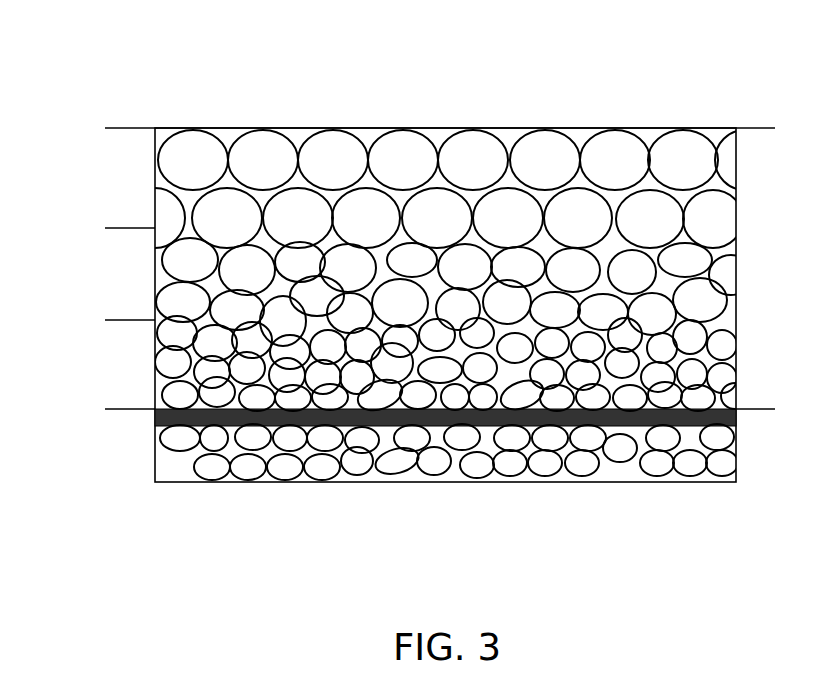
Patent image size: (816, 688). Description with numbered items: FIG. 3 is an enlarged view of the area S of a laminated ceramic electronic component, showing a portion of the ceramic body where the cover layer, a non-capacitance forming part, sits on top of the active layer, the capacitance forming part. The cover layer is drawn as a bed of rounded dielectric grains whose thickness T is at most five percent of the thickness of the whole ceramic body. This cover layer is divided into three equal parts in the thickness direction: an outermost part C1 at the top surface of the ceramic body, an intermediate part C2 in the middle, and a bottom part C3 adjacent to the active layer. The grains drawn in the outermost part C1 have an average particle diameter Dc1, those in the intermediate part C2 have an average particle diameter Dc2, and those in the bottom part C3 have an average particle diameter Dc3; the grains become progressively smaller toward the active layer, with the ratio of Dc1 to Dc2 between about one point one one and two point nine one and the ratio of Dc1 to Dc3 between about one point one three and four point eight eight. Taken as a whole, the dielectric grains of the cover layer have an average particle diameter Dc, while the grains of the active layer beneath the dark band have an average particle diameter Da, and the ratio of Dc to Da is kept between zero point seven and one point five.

The area S is at (427, 49).
The thickness of the cover layer T is at (763, 129).
The outermost part C1 is at (118, 129).
The intermediate part C2 is at (118, 229).
The bottom part C3 is at (118, 321).
The average particle diameter of dielectric grain in outermost part Dc1 is at (293, 148).
The average particle diameter of dielectric grain in intermediate part Dc2 is at (277, 267).
The average particle diameter of dielectric grain in bottom part Dc3 is at (455, 367).
The average particle diameter of dielectric grain in cover layer Dc is at (260, 305).
The average particle diameter of dielectric grain in active layer Da is at (368, 457).